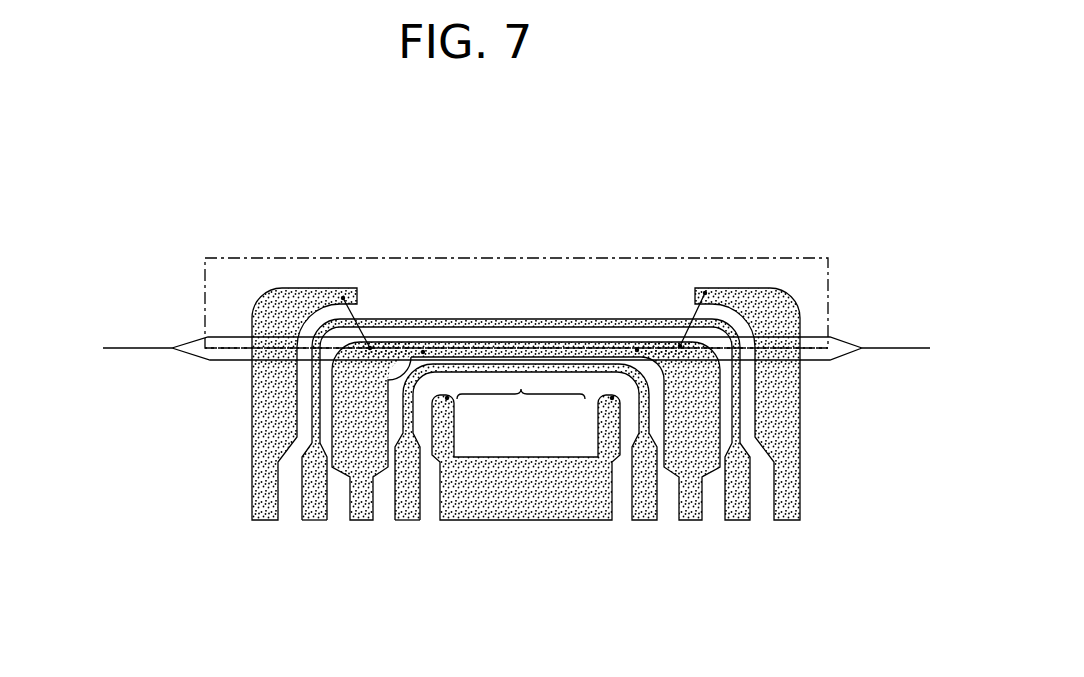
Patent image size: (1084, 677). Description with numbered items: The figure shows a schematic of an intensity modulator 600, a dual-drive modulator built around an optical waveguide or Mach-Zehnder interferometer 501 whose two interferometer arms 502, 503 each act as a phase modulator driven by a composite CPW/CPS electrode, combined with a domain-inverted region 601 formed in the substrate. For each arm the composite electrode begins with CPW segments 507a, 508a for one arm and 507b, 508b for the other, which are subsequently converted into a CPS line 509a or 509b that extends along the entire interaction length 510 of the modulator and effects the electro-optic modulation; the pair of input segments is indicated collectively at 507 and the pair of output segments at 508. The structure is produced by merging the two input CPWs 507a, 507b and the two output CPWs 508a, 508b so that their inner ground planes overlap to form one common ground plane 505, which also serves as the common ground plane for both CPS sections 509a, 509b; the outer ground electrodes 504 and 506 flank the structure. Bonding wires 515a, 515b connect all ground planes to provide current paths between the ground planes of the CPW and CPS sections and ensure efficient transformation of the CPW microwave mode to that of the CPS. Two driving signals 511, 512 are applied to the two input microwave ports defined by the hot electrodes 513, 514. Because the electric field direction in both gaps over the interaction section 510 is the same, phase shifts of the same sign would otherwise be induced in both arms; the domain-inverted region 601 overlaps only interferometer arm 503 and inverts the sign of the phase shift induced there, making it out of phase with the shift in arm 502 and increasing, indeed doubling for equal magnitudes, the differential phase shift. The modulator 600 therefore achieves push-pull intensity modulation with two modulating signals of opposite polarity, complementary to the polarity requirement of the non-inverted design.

The optical waveguide or MZI 501 is at (498, 351).
The interferometer arm 502 is at (222, 361).
The interferometer arm 503 is at (186, 338).
The first lead 504 is at (268, 512).
The ground plane 505 is at (360, 510).
The central lead with recess 506 is at (470, 507).
The left lead head 507 is at (458, 181).
The CPW segment 507a is at (278, 378).
The CPW segment 507b is at (390, 412).
The right lead head 508 is at (835, 192).
The CPW segment 508a is at (689, 381).
The CPW segment 508b is at (731, 280).
The CPS line 509a is at (487, 395).
The CPS line 509b is at (535, 338).
The interaction length 510 is at (521, 410).
The driving signal 511 is at (316, 530).
The driving signal 512 is at (407, 530).
The hot electrode 513 is at (313, 508).
The hot electrode 514 is at (405, 506).
The bonding wires 515a is at (447, 398).
The bonding wires 515b is at (612, 398).
The intensity modulator 600 is at (592, 231).
The domain-inverted region 601 is at (613, 308).